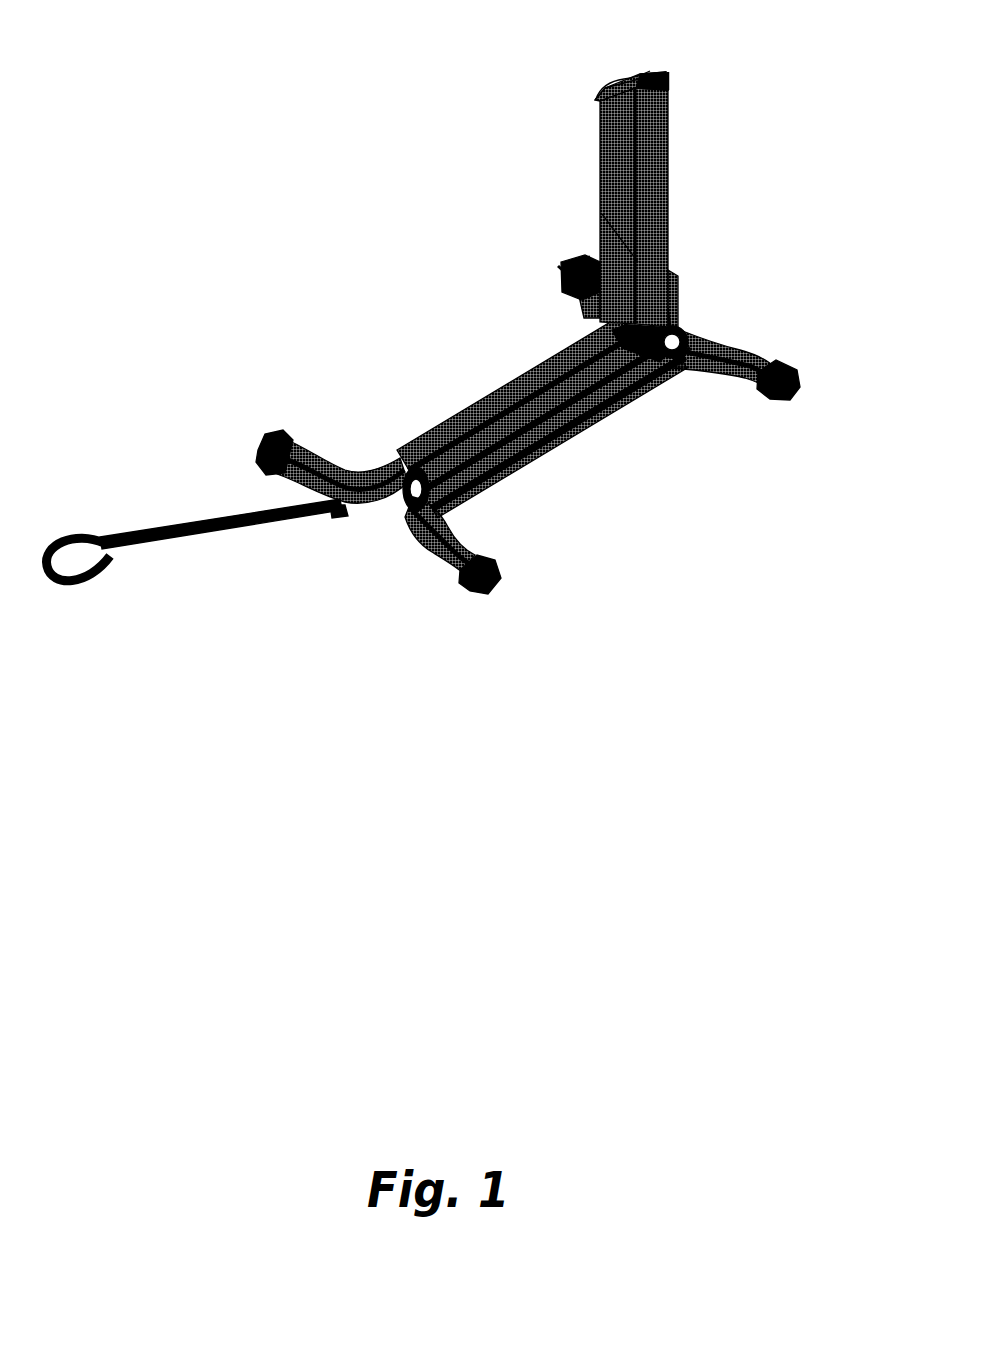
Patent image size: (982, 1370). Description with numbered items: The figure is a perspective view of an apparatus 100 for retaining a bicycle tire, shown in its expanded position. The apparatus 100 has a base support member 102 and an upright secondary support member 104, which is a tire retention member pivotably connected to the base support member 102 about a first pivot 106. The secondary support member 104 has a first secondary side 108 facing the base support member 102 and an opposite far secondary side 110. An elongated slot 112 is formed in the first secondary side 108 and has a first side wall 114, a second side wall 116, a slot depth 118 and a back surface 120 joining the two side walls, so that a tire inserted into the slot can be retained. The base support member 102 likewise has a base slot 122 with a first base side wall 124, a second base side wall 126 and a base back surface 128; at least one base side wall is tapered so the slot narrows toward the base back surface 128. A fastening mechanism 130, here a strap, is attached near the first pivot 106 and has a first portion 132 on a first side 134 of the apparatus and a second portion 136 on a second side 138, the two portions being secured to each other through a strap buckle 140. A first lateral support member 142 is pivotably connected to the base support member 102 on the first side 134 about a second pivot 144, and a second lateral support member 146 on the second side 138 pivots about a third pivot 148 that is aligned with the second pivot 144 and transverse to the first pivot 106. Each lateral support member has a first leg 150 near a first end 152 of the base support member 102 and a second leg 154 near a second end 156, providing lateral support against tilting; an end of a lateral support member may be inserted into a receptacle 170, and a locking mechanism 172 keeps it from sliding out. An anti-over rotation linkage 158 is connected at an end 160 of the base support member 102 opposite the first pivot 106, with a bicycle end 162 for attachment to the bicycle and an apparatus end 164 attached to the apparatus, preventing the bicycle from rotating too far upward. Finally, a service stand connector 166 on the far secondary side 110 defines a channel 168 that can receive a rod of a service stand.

The apparatus 100 is at (436, 326).
The base support member 102 is at (436, 449).
The secondary support member 104 is at (600, 165).
The first pivot 106 is at (597, 324).
The first secondary side 108 is at (597, 184).
The far secondary side 110 is at (714, 205).
The elongated slot 112 is at (651, 72).
The first side wall 114 is at (602, 214).
The second side wall 116 is at (668, 93).
The slot depth 118 is at (623, 69).
The back surface 120 is at (605, 99).
The base slot 122 is at (310, 426).
The first base side wall 124 is at (521, 386).
The second base side wall 126 is at (424, 434).
The base back surface 128 is at (469, 444).
The fastening mechanism 130 is at (563, 303).
The first portion 132 is at (672, 273).
The first side 134 is at (689, 313).
The second portion 136 is at (580, 291).
The second side 138 is at (572, 247).
The strap buckle 140 is at (683, 331).
The first lateral support member 142 is at (543, 409).
The second pivot 144 is at (436, 557).
The second lateral support member 146 is at (358, 458).
The third pivot 148 is at (338, 514).
The first leg 150 is at (464, 544).
The first end 152 is at (765, 362).
The second leg 154 is at (288, 478).
The second end 156 is at (565, 270).
The anti-over rotation linkage 158 is at (176, 528).
The end 160 is at (190, 547).
The bicycle end 162 is at (92, 517).
The apparatus end 164 is at (404, 521).
The service stand connector 166 is at (679, 81).
The channel 168 is at (660, 74).
The receptacle 170 is at (502, 474).
The locking mechanism 172 is at (465, 501).